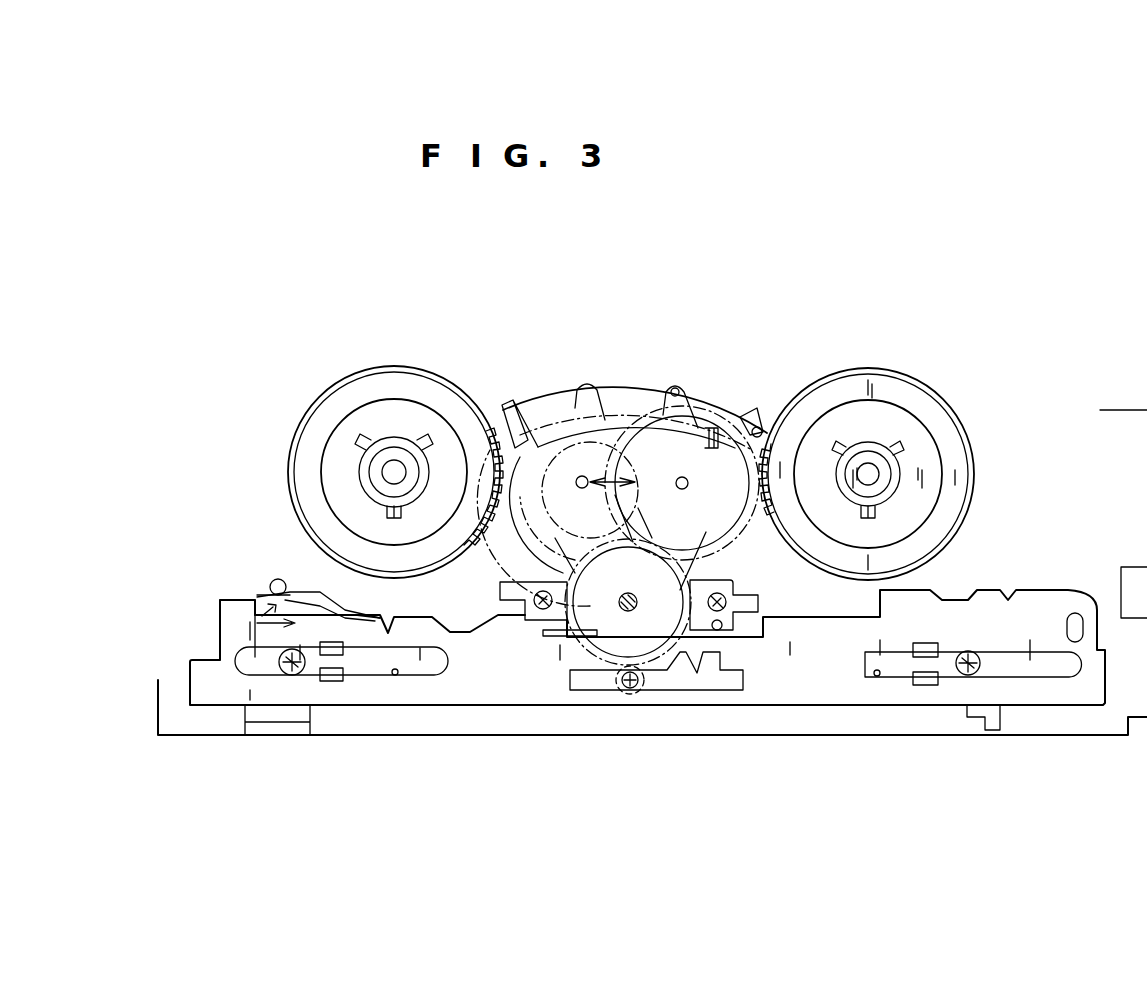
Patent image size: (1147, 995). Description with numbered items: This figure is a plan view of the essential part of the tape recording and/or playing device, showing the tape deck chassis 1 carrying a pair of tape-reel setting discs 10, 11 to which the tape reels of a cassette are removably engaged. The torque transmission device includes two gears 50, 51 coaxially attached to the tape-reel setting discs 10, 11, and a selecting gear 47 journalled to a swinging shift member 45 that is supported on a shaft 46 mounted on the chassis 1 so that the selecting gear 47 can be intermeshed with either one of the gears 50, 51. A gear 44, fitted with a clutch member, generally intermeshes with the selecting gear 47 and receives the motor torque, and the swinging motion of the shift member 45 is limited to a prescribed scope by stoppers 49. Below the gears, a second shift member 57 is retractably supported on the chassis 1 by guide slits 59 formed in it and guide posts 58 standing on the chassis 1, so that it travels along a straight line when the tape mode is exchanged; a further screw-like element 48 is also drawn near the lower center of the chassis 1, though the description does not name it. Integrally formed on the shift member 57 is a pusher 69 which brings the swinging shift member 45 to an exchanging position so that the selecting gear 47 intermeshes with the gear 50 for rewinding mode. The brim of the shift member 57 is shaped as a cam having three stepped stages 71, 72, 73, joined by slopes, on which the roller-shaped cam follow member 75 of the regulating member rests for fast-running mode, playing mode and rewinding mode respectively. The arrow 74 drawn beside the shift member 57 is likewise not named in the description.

The tape deck chassis 1 is at (1058, 722).
The tape-reel setting disc 10 is at (392, 440).
The tape-reel setting disc 11 is at (888, 447).
The gear 44 is at (590, 567).
The shift member 45 is at (705, 435).
The shaft 46 is at (632, 610).
The selecting gear 47 is at (647, 440).
The pivot screw 48 is at (628, 690).
The stoppers 49 is at (677, 386).
The gear 50 is at (306, 422).
The gear 51 is at (848, 372).
The shift member 57 is at (787, 705).
The guide posts 58 is at (291, 675).
The guide slits 59 is at (395, 676).
The pusher 69 is at (558, 632).
The stepped stage 71 is at (338, 622).
The stepped stage 72 is at (246, 598).
The stepped stage 73 is at (255, 600).
The slide block 74 is at (250, 617).
The cam follow member 75 is at (277, 580).